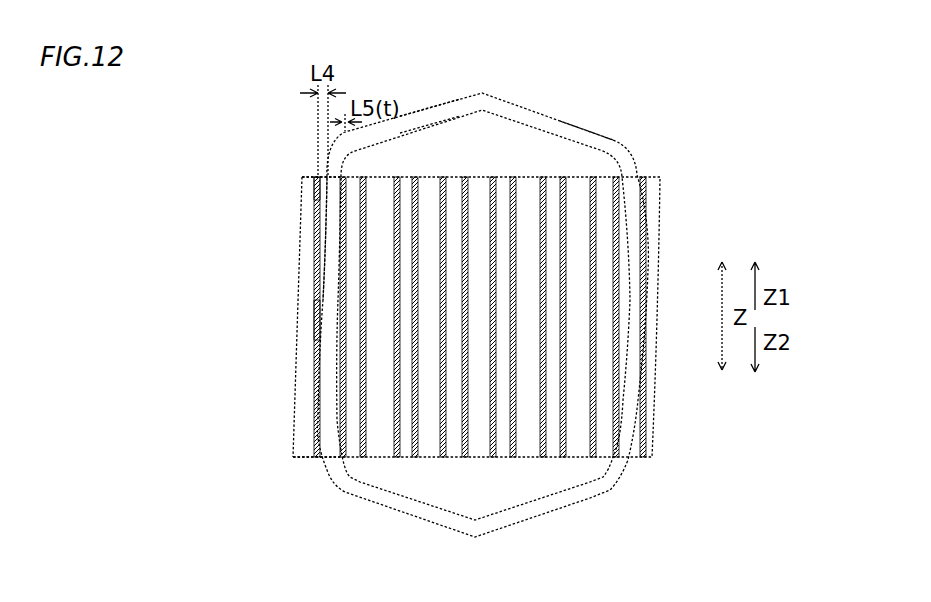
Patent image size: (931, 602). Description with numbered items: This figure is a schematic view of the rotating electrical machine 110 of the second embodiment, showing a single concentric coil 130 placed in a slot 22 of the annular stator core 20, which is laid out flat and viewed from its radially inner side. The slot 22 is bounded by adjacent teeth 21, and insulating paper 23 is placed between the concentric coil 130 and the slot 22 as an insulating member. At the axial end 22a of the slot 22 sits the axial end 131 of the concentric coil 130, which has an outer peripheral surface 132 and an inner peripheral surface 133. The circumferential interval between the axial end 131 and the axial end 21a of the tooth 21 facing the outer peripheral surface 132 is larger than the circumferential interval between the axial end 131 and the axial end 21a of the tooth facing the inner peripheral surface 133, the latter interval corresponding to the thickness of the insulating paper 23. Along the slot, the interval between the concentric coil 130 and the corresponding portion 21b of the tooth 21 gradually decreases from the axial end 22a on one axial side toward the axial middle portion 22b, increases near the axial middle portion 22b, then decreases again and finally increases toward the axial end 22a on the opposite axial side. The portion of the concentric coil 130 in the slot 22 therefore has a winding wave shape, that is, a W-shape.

The stator core 20 is at (661, 249).
The tooth 21 is at (463, 458).
The axial end of tooth 21a is at (312, 175).
The corresponding portion of tooth 21b is at (302, 217).
The slot 22 is at (307, 185).
The axial end of slot 22a is at (317, 173).
The axial middle portion of slot 22b is at (315, 315).
The insulating paper 23 is at (366, 200).
The rotating electrical machine 110 is at (645, 111).
The concentric coil 130 is at (506, 89).
The axial end of concentric coil 131 is at (322, 172).
The outer peripheral surface of axial end 132 is at (432, 107).
The inner peripheral surface of axial end 133 is at (421, 128).